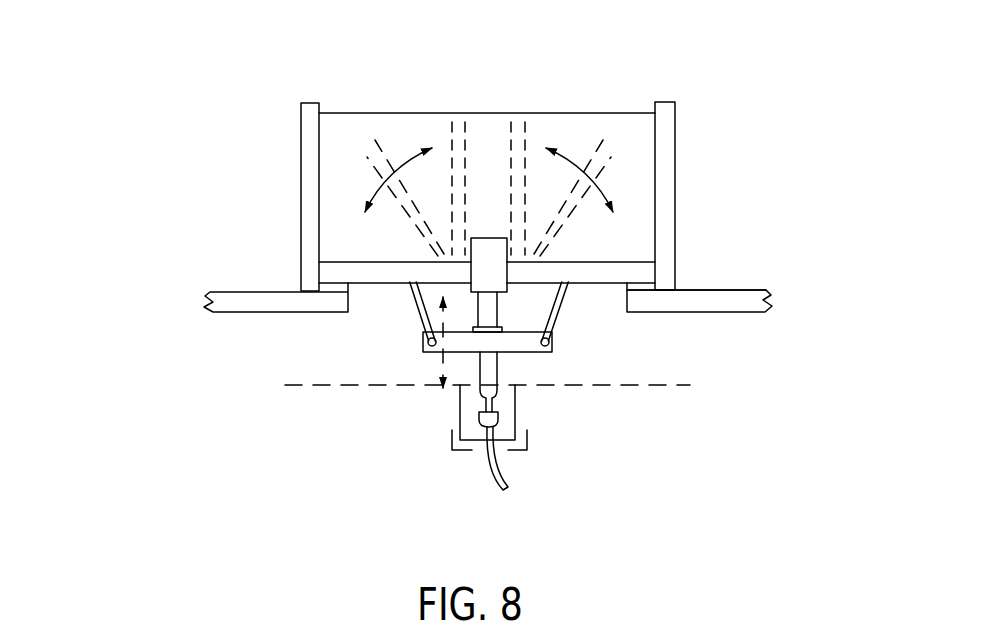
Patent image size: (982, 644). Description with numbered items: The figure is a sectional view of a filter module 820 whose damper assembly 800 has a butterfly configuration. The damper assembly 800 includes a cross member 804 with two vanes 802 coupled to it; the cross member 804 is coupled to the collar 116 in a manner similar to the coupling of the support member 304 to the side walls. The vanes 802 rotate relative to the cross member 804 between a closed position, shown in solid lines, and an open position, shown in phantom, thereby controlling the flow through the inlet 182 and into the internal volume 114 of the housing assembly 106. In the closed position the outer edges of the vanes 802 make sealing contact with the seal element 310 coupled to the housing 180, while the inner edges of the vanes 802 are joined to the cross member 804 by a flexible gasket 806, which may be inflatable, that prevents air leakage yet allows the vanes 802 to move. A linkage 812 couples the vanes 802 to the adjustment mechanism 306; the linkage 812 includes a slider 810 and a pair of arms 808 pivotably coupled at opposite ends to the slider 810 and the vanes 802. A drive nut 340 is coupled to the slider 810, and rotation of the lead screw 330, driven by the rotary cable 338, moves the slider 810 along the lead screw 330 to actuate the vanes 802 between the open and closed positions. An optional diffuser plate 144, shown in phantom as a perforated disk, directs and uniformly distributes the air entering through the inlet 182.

The inlet 182 is at (412, 135).
The damper assembly 800 is at (490, 162).
The cross member 804 is at (490, 238).
The filter module 820 is at (731, 102).
The collar 116 is at (307, 135).
The vanes 802 is at (367, 262).
The housing assembly 106 is at (705, 290).
The housing 180 is at (740, 290).
The seal element 310 is at (336, 291).
The flexible gasket 806 is at (415, 312).
The arms 808 is at (567, 291).
The slider 810 is at (427, 340).
The linkage 812 is at (412, 323).
The drive nut 340 is at (552, 318).
The lead screw 330 is at (507, 366).
The support member 304 is at (457, 413).
The adjustment mechanism 306 is at (533, 380).
The rotary cable 338 is at (510, 488).
The internal volume 114 is at (768, 435).
The diffuser plate 144 is at (628, 383).